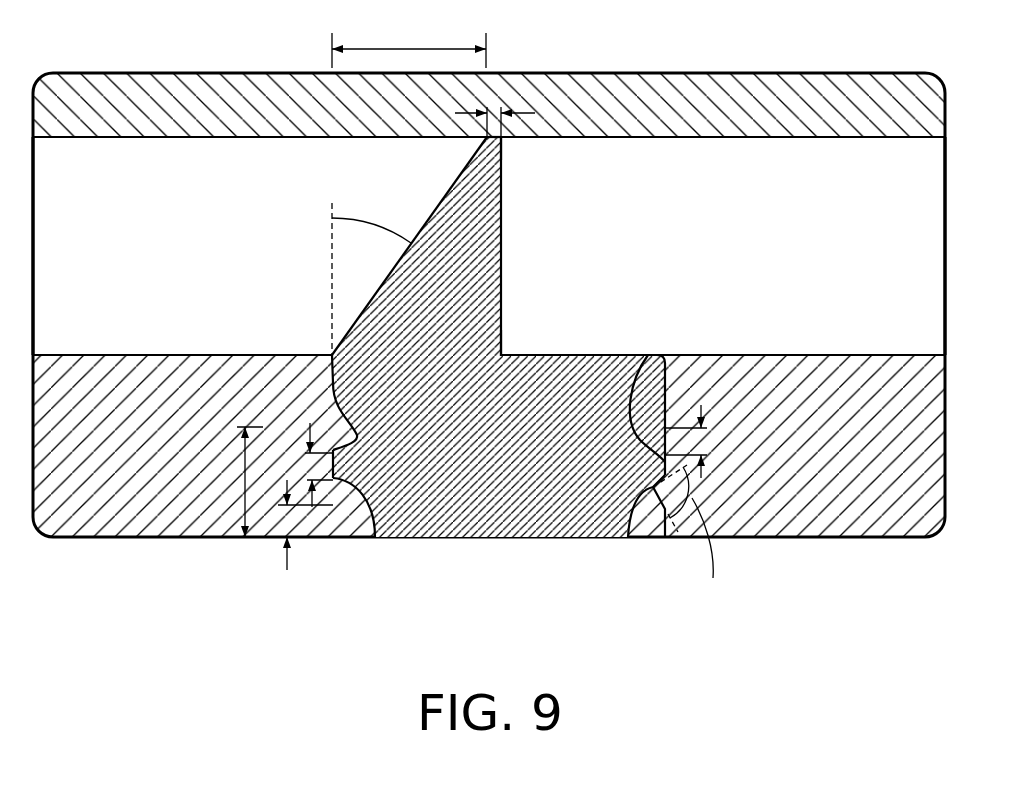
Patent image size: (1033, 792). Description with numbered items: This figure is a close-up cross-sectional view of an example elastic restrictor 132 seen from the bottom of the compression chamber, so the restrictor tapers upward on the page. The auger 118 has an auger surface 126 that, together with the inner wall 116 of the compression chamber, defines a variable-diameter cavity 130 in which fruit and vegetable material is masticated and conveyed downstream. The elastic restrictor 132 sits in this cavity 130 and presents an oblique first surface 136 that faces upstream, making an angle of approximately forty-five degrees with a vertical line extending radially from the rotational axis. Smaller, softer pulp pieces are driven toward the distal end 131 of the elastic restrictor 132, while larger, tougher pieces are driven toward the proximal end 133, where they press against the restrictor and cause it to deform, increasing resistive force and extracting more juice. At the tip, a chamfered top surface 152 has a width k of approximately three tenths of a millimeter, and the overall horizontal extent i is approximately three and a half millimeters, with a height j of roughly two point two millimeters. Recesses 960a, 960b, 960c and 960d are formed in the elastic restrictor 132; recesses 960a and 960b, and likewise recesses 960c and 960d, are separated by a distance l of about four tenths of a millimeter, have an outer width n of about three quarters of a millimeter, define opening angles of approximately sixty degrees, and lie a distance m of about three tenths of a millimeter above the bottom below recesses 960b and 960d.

The inner wall 116 is at (848, 353).
The auger 118 is at (227, 90).
The auger surface 126 is at (740, 85).
The cavity 130 is at (124, 163).
The distal end 131 is at (514, 147).
The elastic restrictor 132 is at (511, 525).
The proximal end 133 is at (514, 345).
The first surface 136 is at (452, 178).
The chamfered top surface 152 is at (494, 133).
The recess 960a is at (328, 362).
The recess 960b is at (347, 490).
The recess 960c is at (643, 357).
The recess 960d is at (629, 497).